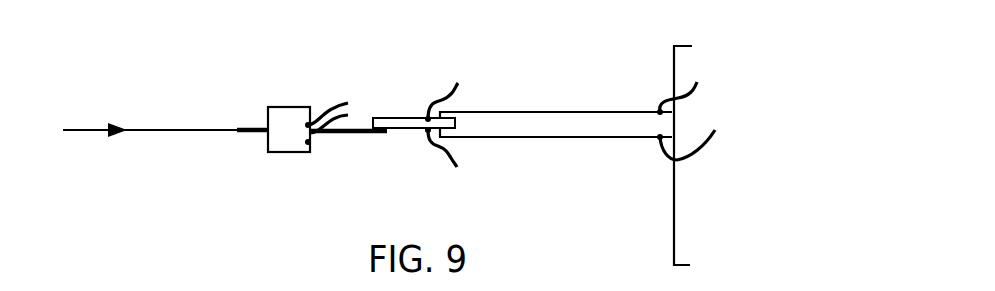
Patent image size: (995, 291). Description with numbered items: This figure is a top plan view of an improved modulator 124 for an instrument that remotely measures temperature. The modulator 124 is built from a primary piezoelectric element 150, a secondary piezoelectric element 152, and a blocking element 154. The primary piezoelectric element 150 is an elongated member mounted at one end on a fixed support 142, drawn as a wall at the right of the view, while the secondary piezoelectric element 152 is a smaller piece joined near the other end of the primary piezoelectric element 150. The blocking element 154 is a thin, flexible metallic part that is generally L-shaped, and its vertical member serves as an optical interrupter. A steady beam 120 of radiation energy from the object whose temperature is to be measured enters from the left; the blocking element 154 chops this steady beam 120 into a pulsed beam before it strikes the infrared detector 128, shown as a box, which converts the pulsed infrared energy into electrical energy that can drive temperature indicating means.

The steady beam 120 is at (162, 130).
The modulator 124 is at (504, 72).
The infrared detector 128 is at (293, 118).
The fixed support 142 is at (740, 197).
The primary piezoelectric element 150 is at (587, 124).
The secondary piezoelectric element 152 is at (415, 125).
The blocking element 154 is at (332, 133).